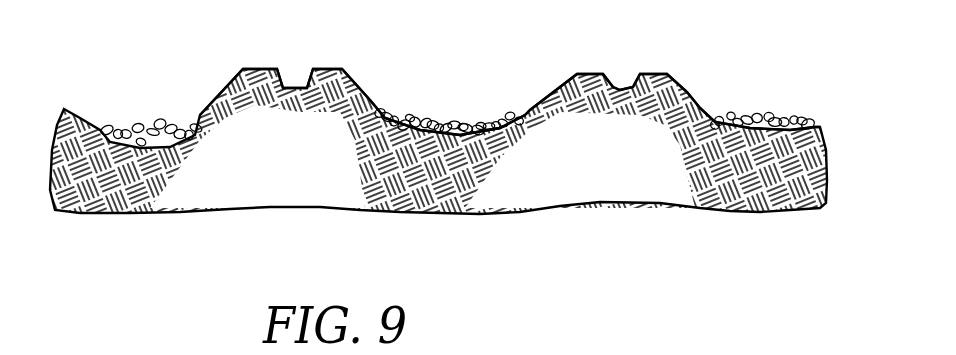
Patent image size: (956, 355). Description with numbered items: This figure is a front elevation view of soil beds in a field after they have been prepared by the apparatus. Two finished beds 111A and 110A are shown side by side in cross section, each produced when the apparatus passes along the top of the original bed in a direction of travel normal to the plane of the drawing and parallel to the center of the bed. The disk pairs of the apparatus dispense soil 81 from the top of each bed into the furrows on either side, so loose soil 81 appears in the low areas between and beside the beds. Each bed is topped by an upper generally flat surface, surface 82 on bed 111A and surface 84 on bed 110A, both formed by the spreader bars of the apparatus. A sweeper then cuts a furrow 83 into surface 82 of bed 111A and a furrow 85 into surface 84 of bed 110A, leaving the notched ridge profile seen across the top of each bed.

The soil 81 is at (159, 119).
The upper generally flat surface 82 is at (258, 68).
The furrow 83 is at (308, 70).
The upper generally flat surface 84 is at (677, 82).
The furrow 85 is at (608, 76).
The bed 110A is at (702, 92).
The bed 111A is at (366, 84).